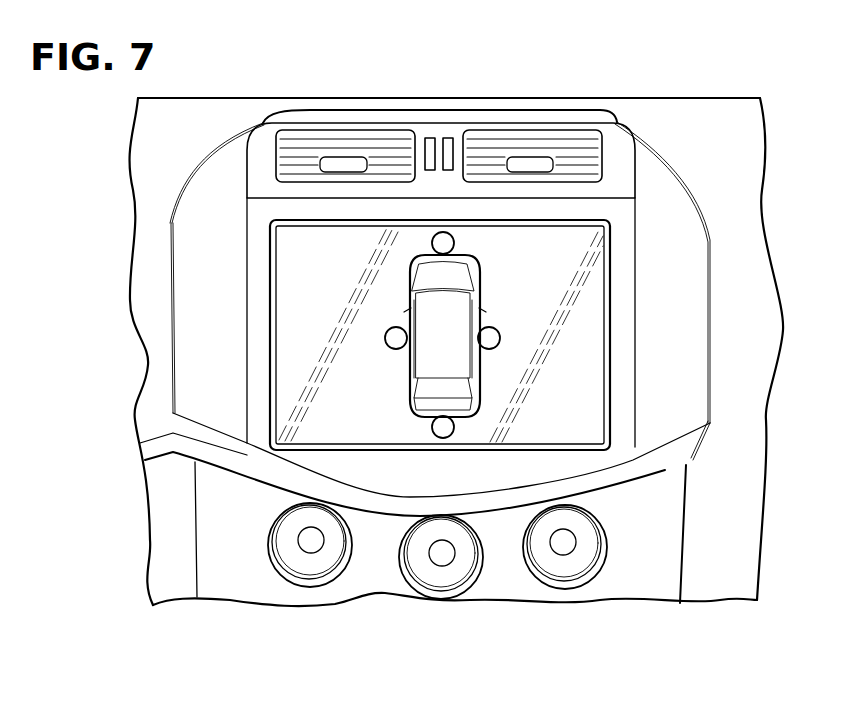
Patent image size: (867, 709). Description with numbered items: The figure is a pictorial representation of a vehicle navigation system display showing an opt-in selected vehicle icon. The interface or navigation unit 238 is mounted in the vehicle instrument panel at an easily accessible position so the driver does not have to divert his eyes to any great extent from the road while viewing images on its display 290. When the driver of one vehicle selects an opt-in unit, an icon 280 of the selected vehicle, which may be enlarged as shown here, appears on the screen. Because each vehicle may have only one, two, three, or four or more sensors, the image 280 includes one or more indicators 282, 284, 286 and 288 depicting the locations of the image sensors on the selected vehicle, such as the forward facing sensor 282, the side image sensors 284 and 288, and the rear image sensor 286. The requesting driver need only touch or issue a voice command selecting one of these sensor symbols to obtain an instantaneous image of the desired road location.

The navigation unit 238 is at (660, 182).
The vehicle icon 280 is at (442, 312).
The forward facing sensor indicator 282 is at (444, 242).
The side image sensor indicator 284 is at (491, 337).
The rear image sensor indicator 286 is at (443, 430).
The image sensor indicator 288 is at (396, 338).
The display screen 290 is at (295, 275).